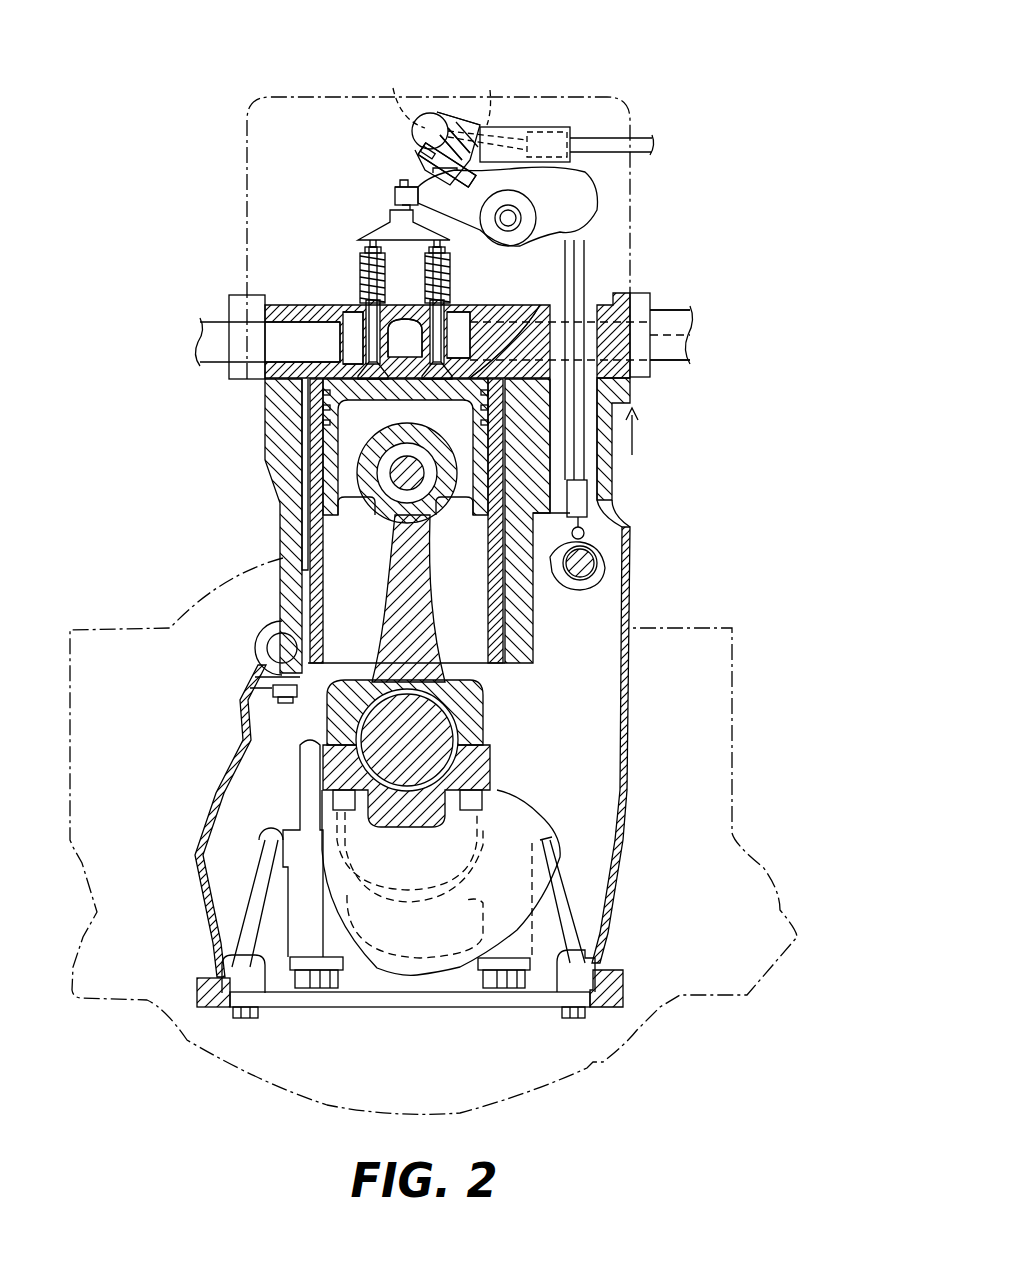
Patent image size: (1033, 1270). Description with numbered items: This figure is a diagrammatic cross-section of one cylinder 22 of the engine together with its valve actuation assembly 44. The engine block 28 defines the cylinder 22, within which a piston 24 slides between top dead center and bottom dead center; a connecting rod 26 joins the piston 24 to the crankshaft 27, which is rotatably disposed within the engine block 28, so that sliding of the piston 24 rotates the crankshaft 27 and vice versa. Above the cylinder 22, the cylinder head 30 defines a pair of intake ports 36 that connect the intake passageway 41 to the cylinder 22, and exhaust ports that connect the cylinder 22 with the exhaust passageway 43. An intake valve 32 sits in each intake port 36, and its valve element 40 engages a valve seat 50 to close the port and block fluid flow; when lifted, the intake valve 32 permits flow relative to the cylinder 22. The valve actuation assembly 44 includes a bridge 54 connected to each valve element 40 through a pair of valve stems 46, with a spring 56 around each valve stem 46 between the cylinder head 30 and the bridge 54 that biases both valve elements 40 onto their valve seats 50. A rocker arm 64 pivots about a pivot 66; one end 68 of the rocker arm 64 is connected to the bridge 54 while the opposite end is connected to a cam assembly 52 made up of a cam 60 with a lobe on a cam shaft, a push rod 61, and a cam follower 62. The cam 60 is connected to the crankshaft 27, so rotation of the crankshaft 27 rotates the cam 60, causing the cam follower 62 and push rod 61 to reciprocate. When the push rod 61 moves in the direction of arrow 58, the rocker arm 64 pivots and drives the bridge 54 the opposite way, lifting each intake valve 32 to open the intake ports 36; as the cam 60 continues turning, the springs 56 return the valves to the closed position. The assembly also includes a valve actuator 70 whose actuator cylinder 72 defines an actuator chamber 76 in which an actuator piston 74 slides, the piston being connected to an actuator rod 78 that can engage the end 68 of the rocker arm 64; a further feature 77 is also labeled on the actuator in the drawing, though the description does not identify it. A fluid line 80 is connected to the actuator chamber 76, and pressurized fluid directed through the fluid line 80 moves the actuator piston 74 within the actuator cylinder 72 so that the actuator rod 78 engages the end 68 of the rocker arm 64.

The cylinder 22 is at (325, 550).
The piston 24 is at (300, 488).
The connecting rod 26 is at (445, 632).
The crankshaft 27 is at (515, 812).
The engine block 28 is at (285, 605).
The cylinder head 30 is at (648, 370).
The intake valve 32 is at (367, 318).
The intake port 36 is at (368, 362).
The valve element 40 is at (437, 358).
The intake passageway 41 is at (258, 332).
The exhaust passageway 43 is at (688, 328).
The valve actuation assembly 44 is at (662, 92).
The valve stem 46 is at (358, 280).
The valve seat 50 is at (350, 410).
The cam assembly 52 is at (712, 467).
The bridge 54 is at (385, 210).
The spring 56 is at (362, 255).
The arrow 58 is at (634, 432).
The cam 60 is at (562, 590).
The push rod 61 is at (588, 460).
The cam follower 62 is at (590, 535).
The rocker arm 64 is at (575, 208).
The pivot 66 is at (520, 210).
The end of rocker arm 68 is at (400, 188).
The valve actuator 70 is at (470, 105).
The actuator cylinder 72 is at (402, 93).
The actuator piston 74 is at (438, 126).
The actuator chamber 76 is at (474, 105).
The injector rib 77 is at (498, 135).
The actuator rod 78 is at (430, 170).
The fluid line 80 is at (580, 127).